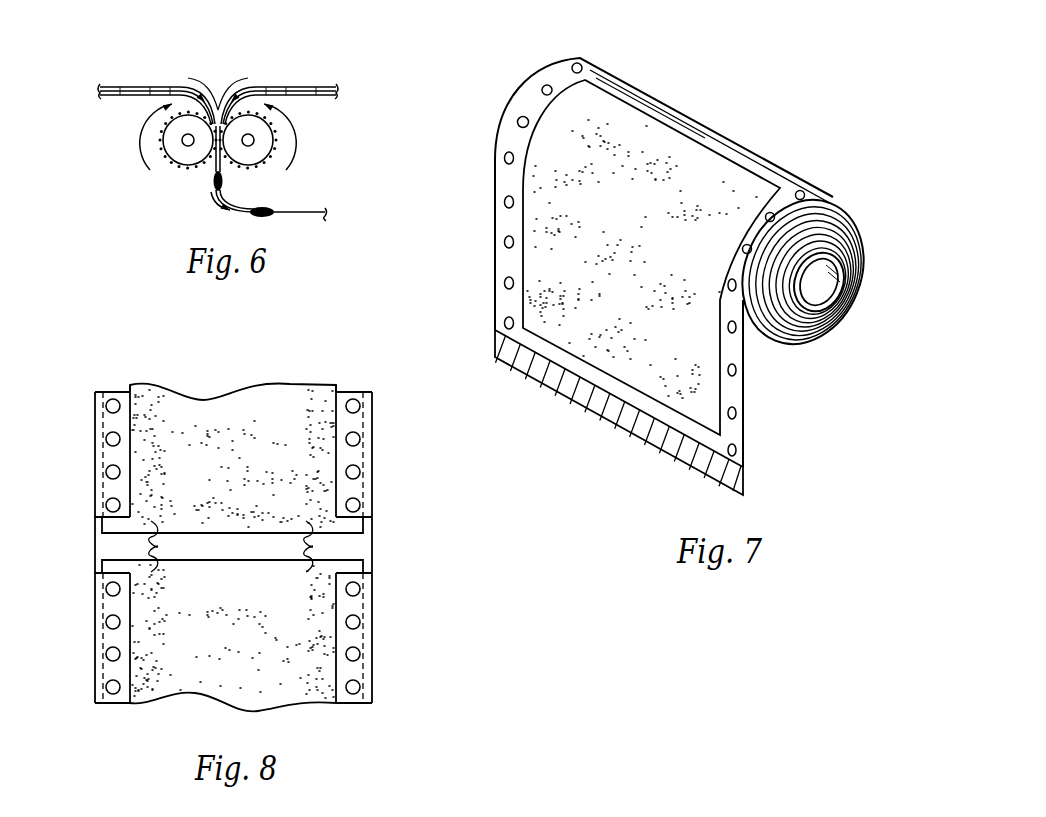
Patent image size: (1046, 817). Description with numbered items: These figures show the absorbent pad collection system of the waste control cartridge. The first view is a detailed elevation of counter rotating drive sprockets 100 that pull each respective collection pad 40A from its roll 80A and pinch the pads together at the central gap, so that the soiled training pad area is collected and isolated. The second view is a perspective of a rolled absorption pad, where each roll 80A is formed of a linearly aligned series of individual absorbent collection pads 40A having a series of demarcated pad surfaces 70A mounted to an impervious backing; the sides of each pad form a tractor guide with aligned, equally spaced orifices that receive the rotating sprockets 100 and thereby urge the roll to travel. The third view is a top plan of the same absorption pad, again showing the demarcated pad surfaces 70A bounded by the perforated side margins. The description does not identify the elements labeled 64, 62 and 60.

In FIG. 6, the counter rotating drive sprockets 100 is at (190, 172).
In FIG. 7, the perforated tractor-feed margin 64 is at (515, 140).
In FIG. 8, the perforated tractor-feed margin 64 is at (113, 455).
In FIG. 7, the demarcated pad surfaces 70A is at (640, 130).
In FIG. 7, the absorbent pad collection roll 80A is at (785, 113).
In FIG. 8, the absorbent pad collection roll 80A is at (378, 473).
In FIG. 7, the absorbent collection pad 40A is at (535, 365).
In FIG. 7, the roll of web material 62 is at (750, 403).
In FIG. 8, the label 60 is at (221, 418).